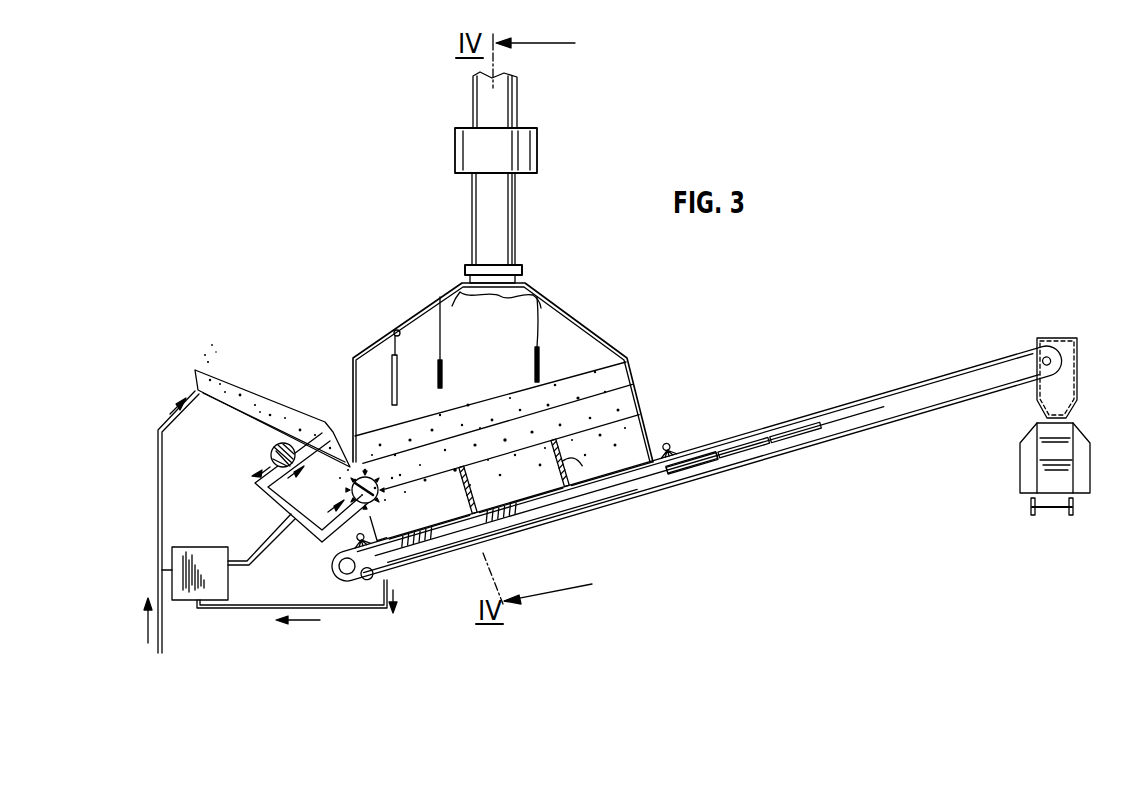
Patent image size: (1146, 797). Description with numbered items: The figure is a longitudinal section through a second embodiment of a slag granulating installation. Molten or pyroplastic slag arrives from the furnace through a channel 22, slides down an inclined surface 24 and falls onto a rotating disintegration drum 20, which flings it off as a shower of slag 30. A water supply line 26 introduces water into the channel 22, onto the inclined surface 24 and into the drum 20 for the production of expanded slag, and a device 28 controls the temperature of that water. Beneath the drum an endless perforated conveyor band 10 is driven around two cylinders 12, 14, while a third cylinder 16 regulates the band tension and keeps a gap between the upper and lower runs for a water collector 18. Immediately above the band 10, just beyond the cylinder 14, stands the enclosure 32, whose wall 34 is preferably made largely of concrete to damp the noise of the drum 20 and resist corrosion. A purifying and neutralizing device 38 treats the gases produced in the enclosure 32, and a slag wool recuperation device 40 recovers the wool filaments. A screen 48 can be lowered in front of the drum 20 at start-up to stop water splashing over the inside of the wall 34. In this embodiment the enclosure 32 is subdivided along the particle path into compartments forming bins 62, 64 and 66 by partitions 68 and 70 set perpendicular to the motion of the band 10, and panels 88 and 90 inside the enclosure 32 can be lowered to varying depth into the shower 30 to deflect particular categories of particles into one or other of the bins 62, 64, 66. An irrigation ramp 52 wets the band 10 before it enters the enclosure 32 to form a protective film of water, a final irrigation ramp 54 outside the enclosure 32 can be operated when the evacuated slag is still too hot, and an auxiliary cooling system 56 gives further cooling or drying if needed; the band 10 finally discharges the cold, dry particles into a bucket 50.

The endless perforated conveyor band 10 is at (852, 403).
The cylinder 12 is at (1043, 358).
The cylinder 14 is at (347, 575).
The third cylinder 16 is at (368, 585).
The water collector 18 is at (403, 557).
The disintegration drum 20 is at (350, 488).
The channel 22 is at (238, 391).
The inclined surface 24 is at (343, 440).
The water supply line 26 is at (162, 632).
The water temperature control device 28 is at (180, 565).
The shower of slag 30 is at (603, 413).
The enclosure 32 is at (470, 315).
The wall 34 is at (543, 300).
The purifying and neutralizing device 38 is at (527, 153).
The slag wool recuperation device 40 is at (520, 268).
The screen 48 is at (390, 372).
The bucket 50 is at (1043, 447).
The irrigation ramp 52 is at (358, 540).
The final irrigation ramp 54 is at (667, 444).
The auxiliary cooling system 56 is at (700, 464).
The bin 62 is at (428, 508).
The bin 64 is at (538, 475).
The bin 66 is at (625, 455).
The partition 68 is at (477, 497).
The partition 70 is at (572, 470).
The panel 88 is at (437, 360).
The panel 90 is at (540, 348).